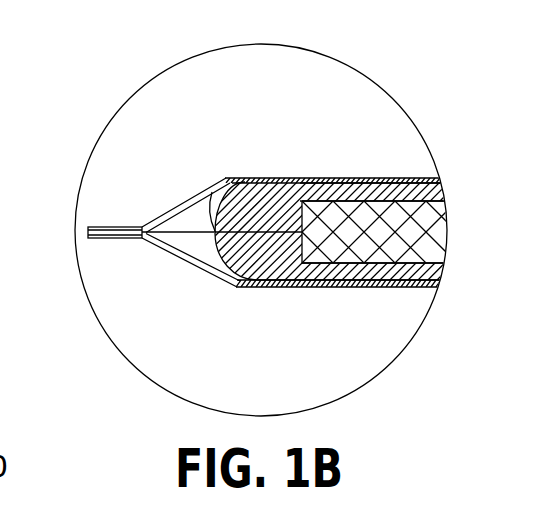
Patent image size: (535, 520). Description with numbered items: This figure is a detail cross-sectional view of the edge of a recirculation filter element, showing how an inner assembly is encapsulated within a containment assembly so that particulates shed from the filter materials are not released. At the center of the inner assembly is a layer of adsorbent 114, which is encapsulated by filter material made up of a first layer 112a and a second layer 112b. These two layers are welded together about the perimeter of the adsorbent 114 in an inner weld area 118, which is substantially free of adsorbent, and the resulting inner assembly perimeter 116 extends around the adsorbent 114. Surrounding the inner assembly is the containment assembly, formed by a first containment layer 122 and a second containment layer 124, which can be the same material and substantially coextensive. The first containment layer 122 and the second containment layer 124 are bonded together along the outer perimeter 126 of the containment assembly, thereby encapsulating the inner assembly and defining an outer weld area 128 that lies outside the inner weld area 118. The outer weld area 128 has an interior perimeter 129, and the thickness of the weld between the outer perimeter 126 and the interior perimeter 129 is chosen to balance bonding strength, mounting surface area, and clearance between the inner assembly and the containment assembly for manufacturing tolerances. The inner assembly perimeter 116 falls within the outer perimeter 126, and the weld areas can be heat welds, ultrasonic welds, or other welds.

The first layer 112a is at (427, 195).
The second layer 112b is at (258, 263).
The adsorbent 114 is at (332, 213).
The inner assembly perimeter 116 is at (214, 231).
The inner weld area 118 is at (212, 192).
The first containment layer 122 is at (250, 178).
The second containment layer 124 is at (181, 257).
The outer perimeter 126 is at (90, 227).
The outer weld area 128 is at (108, 226).
The interior perimeter 129 is at (142, 237).